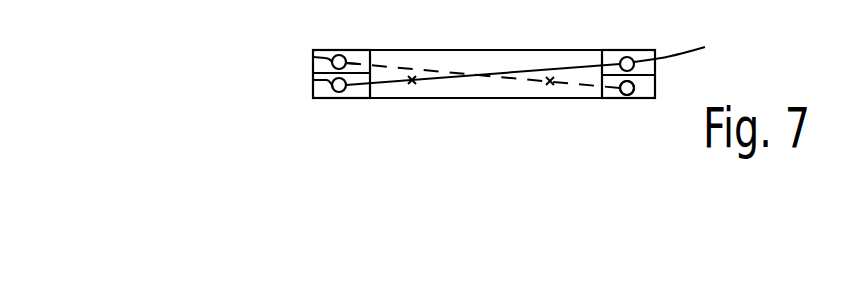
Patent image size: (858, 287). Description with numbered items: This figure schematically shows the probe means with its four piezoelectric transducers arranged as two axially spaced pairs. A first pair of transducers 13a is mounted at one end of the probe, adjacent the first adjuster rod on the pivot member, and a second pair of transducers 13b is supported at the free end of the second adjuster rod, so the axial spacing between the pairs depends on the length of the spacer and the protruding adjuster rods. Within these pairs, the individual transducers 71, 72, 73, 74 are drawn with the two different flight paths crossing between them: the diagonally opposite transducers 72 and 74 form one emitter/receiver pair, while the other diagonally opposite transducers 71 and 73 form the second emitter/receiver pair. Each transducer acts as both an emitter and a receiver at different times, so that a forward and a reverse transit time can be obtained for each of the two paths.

The first pair of transducers 13a is at (353, 50).
The second pair of transducers 13b is at (612, 50).
The piezoelectric transducer 71 is at (313, 80).
The piezoelectric transducer 72 is at (313, 57).
The piezoelectric transducer 73 is at (682, 50).
The piezoelectric transducer 74 is at (627, 96).